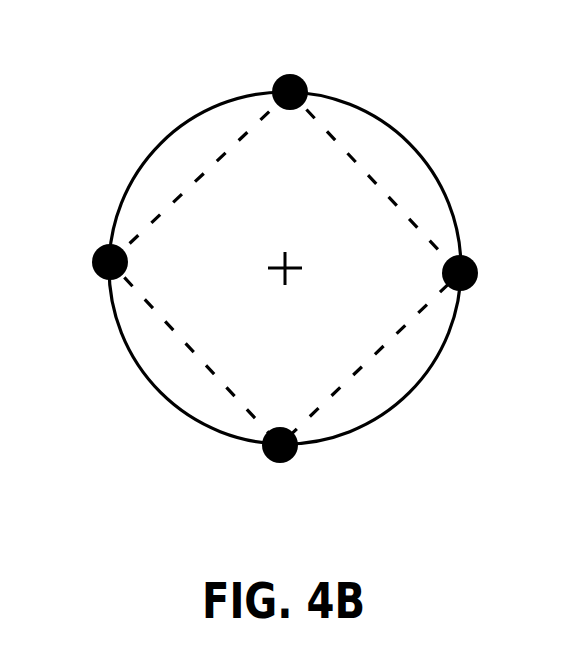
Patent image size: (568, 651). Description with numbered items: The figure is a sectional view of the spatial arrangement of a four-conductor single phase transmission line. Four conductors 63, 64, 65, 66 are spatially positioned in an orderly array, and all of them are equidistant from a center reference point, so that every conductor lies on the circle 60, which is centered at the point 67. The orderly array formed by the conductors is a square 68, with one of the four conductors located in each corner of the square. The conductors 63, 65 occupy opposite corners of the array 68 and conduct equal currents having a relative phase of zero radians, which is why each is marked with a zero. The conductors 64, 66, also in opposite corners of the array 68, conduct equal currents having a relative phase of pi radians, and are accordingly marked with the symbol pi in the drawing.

The circle 60 is at (427, 160).
The conductor 63 is at (471, 262).
The conductor 64 is at (280, 78).
The conductor 65 is at (106, 246).
The conductor 66 is at (268, 462).
The center point 67 is at (307, 258).
The square 68 is at (184, 341).